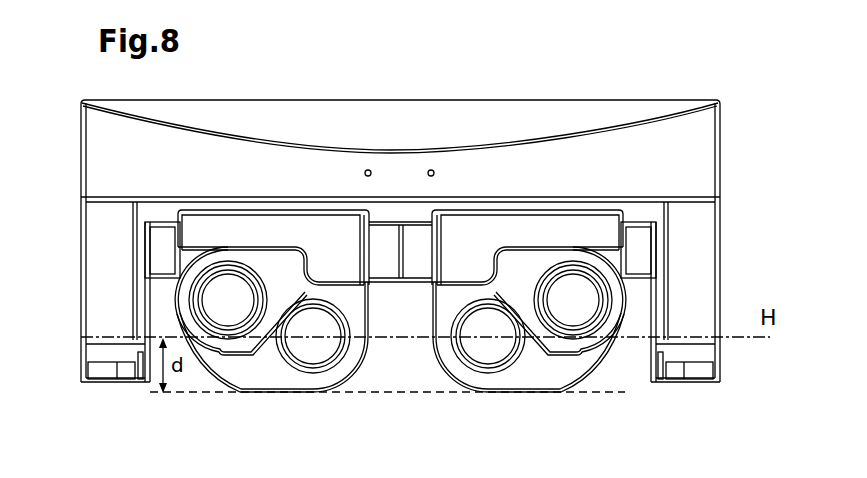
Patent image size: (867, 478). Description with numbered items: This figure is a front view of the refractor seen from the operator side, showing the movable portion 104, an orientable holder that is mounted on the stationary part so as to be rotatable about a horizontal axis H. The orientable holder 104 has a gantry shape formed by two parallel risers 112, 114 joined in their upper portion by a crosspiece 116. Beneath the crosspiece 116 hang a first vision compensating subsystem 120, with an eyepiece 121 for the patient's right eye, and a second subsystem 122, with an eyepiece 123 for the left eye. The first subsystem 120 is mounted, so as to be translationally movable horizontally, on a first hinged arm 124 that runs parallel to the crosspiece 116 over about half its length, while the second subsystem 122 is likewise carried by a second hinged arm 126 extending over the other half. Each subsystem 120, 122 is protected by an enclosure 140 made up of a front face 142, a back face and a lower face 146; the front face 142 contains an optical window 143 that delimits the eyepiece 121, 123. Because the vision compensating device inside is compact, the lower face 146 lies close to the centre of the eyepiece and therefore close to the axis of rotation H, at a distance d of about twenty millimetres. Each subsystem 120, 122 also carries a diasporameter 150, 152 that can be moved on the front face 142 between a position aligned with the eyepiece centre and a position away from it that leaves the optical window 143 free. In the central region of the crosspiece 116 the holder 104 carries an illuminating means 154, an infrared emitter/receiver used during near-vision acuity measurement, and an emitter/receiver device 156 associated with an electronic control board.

The movable portion 104 is at (100, 167).
The riser 112 is at (700, 258).
The riser 114 is at (100, 295).
The crosspiece 116 is at (623, 153).
The first vision compensating subsystem 120 is at (266, 406).
The eyepiece 121 is at (303, 350).
The second subsystem 122 is at (611, 372).
The eyepiece 123 is at (503, 347).
The first hinged arm 124 is at (389, 240).
The second hinged arm 126 is at (413, 240).
The enclosure 140 is at (335, 233).
The front face 142 is at (445, 305).
The optical window 143 is at (457, 357).
The lower face 146 is at (533, 397).
The diasporameter 150 is at (228, 290).
The diasporameter 152 is at (573, 288).
The illuminating means 154 is at (368, 166).
The emitter/receiver device 156 is at (431, 166).